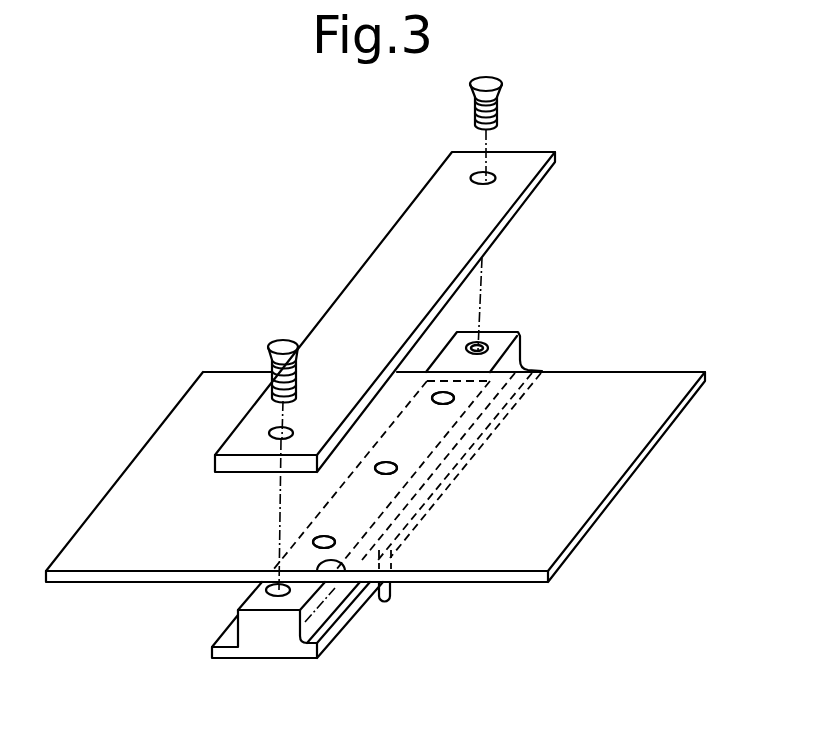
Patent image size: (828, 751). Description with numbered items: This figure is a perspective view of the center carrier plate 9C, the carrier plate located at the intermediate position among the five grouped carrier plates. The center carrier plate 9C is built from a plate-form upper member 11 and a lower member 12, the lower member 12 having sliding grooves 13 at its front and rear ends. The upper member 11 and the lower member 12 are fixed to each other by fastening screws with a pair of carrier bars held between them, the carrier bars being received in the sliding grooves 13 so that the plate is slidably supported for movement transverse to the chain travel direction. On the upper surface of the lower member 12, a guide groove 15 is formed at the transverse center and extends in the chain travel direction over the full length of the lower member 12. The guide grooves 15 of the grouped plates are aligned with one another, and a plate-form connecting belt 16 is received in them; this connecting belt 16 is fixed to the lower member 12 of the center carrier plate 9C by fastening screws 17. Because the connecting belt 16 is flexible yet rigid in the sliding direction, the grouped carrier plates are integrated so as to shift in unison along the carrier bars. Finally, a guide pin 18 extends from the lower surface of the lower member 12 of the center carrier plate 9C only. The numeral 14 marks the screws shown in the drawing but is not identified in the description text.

The center carrier plate 9C is at (543, 142).
The upper member 11 is at (368, 272).
The lower member 12 is at (512, 333).
The sliding grooves 13 is at (302, 656).
The screw 14 is at (499, 112).
The guide groove 15 is at (336, 578).
The connecting belt 16 is at (614, 378).
The fastening screws 17 is at (327, 535).
The guide pin 18 is at (391, 598).